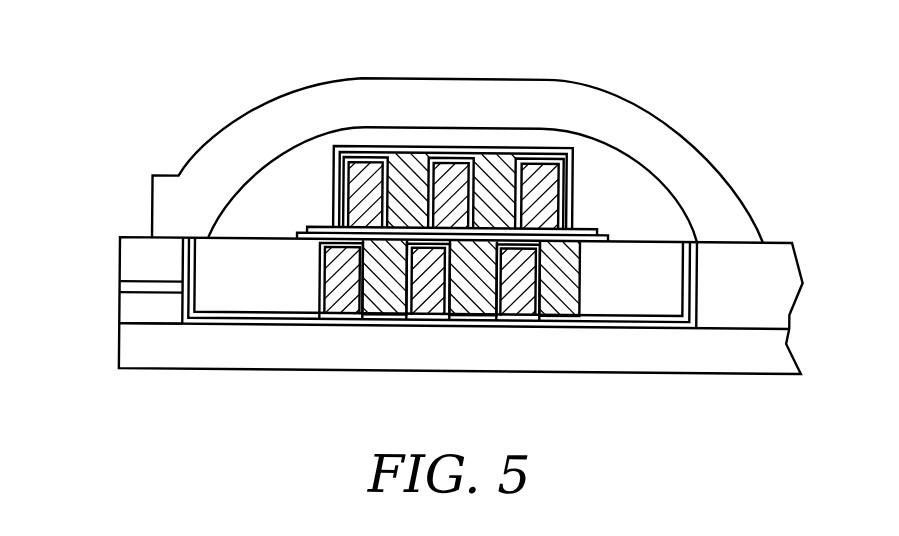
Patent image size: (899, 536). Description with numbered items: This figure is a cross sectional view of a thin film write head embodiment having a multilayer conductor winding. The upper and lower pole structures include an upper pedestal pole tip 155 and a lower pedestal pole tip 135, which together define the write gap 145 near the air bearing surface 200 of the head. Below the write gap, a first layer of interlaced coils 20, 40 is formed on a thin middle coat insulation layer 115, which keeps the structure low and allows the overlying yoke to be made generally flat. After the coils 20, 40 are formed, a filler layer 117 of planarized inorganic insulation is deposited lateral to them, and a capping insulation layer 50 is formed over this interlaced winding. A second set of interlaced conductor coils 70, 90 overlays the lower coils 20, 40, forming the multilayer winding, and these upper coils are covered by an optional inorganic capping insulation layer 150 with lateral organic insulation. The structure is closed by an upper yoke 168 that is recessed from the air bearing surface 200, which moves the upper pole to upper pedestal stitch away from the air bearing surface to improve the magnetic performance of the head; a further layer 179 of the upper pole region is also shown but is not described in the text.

The air bearing surface 200 is at (108, 216).
The upper yoke 168 is at (200, 180).
The inner cap layer 179 is at (280, 195).
The inorganic capping insulation layer 150 is at (357, 151).
The interlaced conductor coil 70 is at (467, 163).
The interlaced conductor coil 90 is at (483, 167).
The upper pedestal pole tip 155 is at (136, 255).
The write gap 145 is at (134, 291).
The lower pedestal pole tip 135 is at (136, 315).
The filler layer 117 is at (225, 282).
The thin middle coat insulation layer 115 is at (307, 328).
The interlaced coil 20 is at (423, 317).
The interlaced coil 40 is at (483, 310).
The capping insulation layer 50 is at (587, 246).